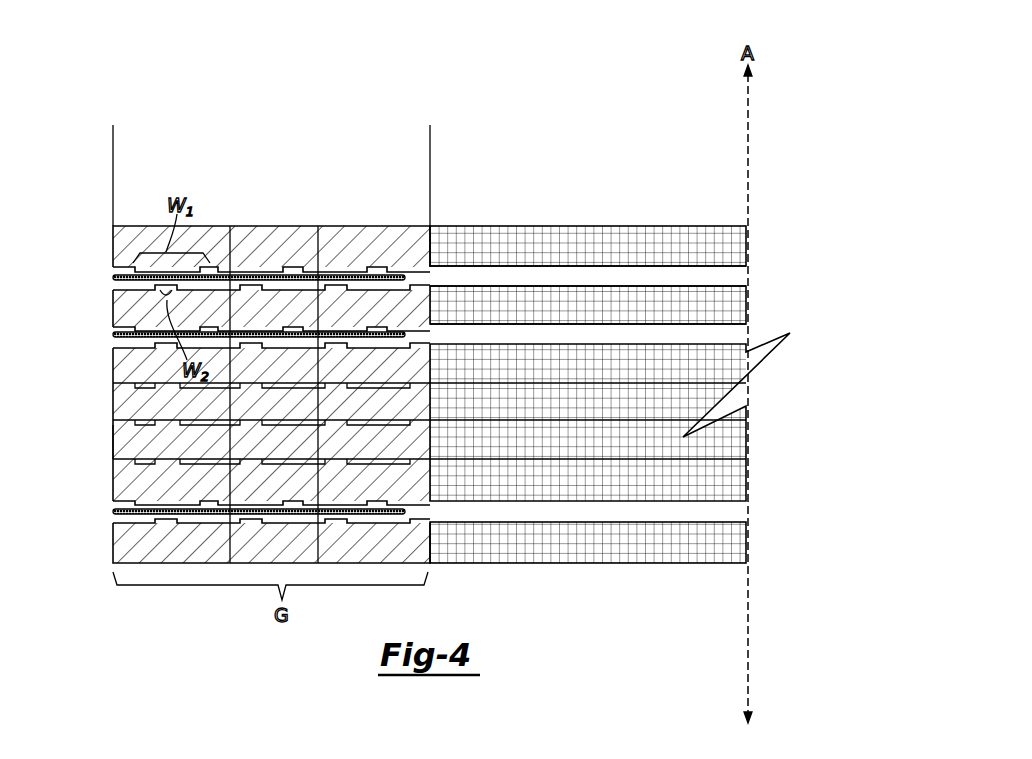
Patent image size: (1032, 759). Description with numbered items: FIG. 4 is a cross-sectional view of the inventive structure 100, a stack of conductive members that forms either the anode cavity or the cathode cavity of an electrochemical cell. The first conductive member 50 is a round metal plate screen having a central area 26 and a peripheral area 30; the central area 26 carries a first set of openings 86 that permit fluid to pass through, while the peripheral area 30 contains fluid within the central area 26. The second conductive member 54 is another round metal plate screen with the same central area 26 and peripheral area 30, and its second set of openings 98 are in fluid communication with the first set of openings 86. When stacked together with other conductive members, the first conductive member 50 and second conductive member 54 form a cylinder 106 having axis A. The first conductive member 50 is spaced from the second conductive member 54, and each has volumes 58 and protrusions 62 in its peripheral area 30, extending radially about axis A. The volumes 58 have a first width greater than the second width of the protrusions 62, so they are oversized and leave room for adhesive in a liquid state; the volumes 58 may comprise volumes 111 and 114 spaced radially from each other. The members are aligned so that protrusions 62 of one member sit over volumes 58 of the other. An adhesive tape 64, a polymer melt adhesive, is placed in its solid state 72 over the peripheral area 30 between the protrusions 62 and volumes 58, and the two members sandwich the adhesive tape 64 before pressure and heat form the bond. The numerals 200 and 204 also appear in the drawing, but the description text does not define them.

The inventive structure 100 is at (773, 128).
The central area 26 is at (705, 225).
The peripheral area 30 is at (127, 208).
The first conductive member 50 is at (113, 243).
The second conductive member 54 is at (108, 323).
The volumes 58 is at (150, 270).
The protrusions 62 is at (220, 268).
The adhesive tape 64 is at (137, 278).
The solid state 72 is at (133, 286).
The first set of openings 86 is at (512, 252).
The second set of openings 98 is at (735, 305).
The cylinder 106 is at (93, 213).
The volume 111 is at (320, 258).
The volume 114 is at (238, 258).
The intermediate plate 200 is at (127, 437).
The plate interface 204 is at (185, 422).